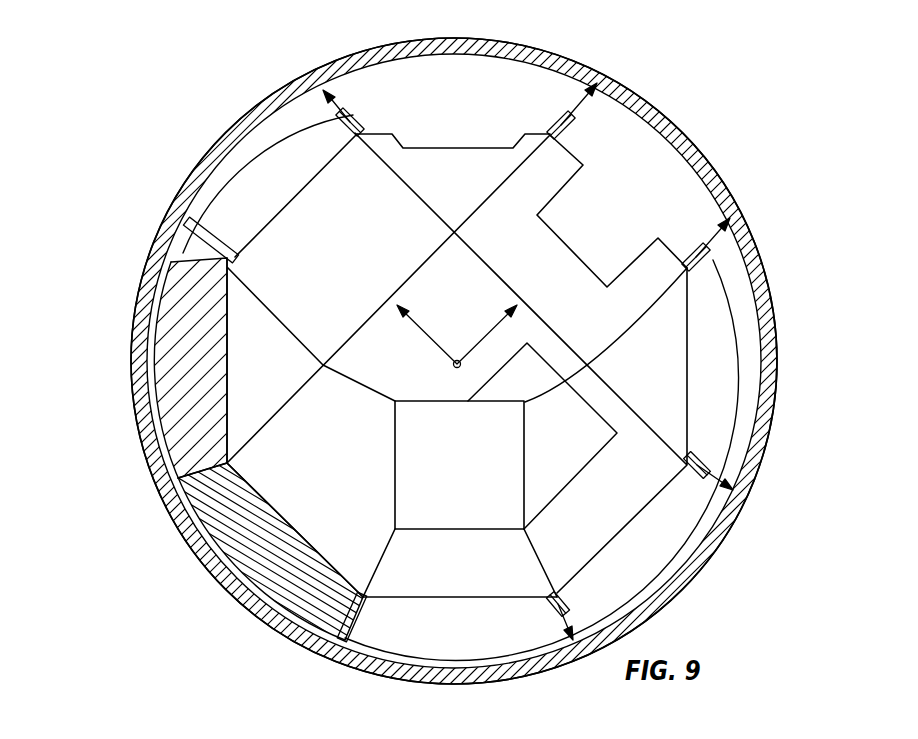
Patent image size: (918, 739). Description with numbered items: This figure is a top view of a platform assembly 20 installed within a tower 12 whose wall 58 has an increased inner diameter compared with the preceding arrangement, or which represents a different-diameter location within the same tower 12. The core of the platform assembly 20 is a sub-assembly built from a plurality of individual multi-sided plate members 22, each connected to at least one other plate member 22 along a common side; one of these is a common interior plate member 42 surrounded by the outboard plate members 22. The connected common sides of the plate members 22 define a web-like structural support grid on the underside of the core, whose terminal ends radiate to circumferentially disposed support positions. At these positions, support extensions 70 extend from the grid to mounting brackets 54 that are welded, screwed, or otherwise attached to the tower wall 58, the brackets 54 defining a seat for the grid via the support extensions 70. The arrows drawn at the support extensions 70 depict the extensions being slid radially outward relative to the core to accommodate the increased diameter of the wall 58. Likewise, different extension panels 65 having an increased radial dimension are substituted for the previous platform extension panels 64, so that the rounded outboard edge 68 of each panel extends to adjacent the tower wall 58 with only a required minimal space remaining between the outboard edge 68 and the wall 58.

The tower 12 is at (744, 212).
The platform assembly 20 is at (737, 85).
The plate members 22 is at (337, 261).
The common interior plate member 42 is at (455, 307).
The mounting bracket 54 is at (597, 227).
The tower wall 58 is at (441, 52).
The platform extension panels 64 is at (283, 173).
The extension panels 65 is at (176, 343).
The outboard edge 68 is at (166, 268).
The support extensions 70 is at (202, 222).